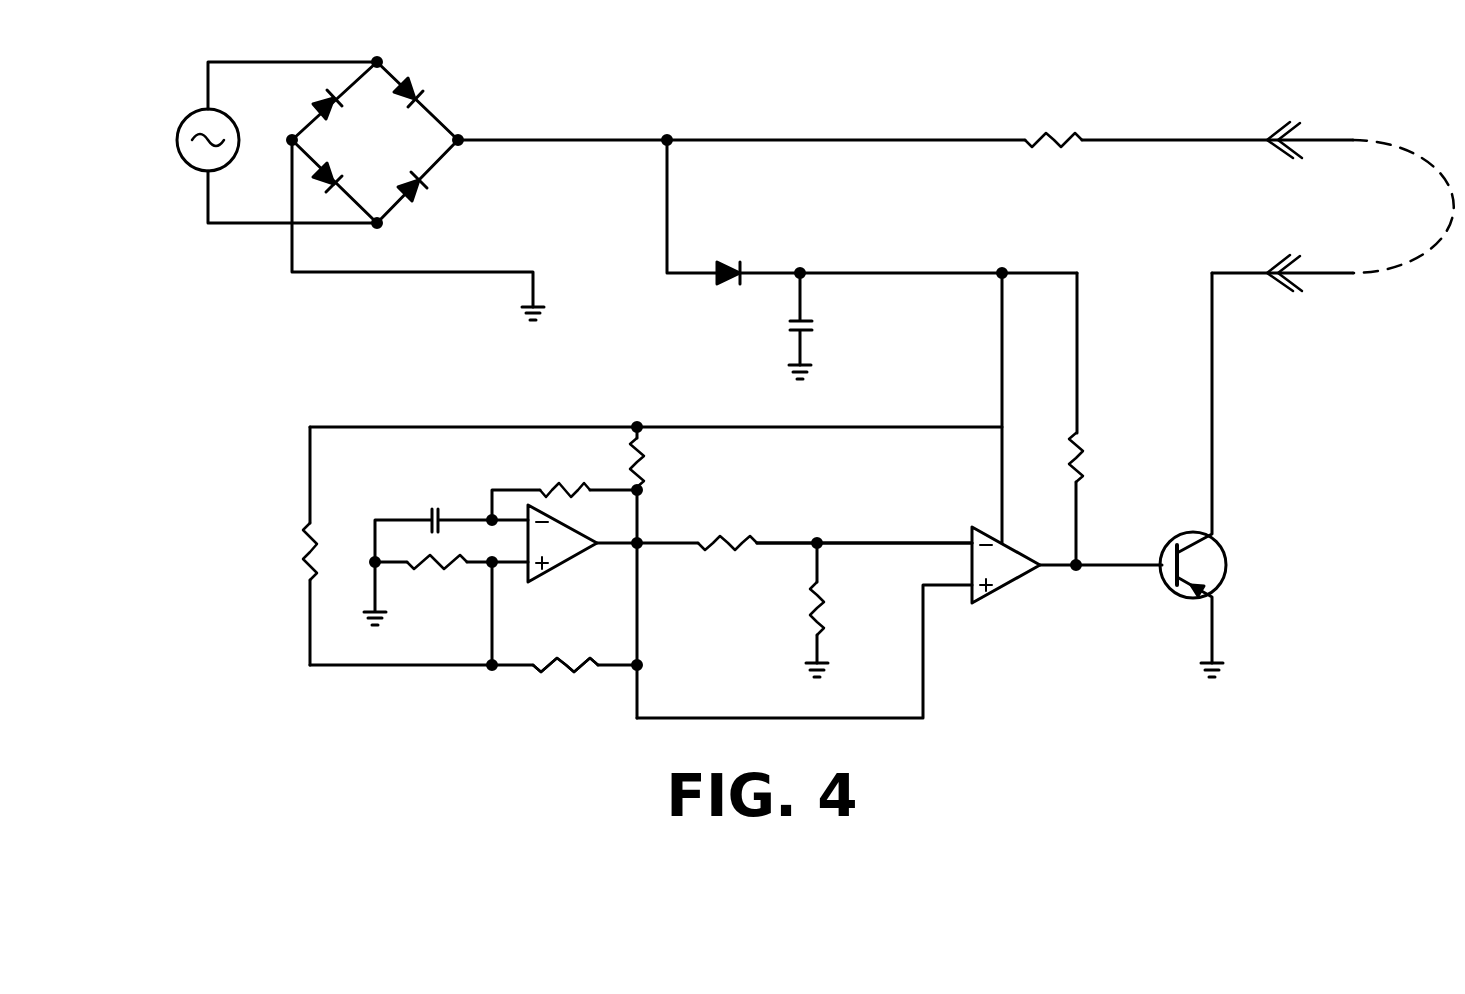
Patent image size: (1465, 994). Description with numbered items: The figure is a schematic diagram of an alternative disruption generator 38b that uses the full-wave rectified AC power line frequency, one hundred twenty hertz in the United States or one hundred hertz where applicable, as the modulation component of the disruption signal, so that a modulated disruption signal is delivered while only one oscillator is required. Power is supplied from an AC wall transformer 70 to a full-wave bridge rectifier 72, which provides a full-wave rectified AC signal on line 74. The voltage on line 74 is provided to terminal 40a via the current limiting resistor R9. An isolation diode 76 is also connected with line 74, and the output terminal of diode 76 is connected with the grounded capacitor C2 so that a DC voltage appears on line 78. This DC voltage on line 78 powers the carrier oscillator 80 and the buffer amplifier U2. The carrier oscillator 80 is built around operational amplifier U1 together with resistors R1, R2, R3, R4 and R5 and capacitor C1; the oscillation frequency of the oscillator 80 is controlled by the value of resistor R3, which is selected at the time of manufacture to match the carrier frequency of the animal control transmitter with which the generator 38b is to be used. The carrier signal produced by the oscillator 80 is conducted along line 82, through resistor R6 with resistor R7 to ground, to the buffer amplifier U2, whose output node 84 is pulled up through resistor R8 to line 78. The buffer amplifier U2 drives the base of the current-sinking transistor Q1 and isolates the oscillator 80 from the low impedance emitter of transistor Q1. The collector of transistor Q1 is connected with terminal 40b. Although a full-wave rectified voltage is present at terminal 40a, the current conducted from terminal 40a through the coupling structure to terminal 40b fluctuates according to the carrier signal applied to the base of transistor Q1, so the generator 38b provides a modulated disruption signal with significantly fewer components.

The disruption generator 38b is at (297, 351).
The AC wall transformer 70 is at (188, 118).
The full-wave bridge rectifier 72 is at (445, 103).
The line 74 is at (667, 140).
The isolation diode 76 is at (729, 256).
The line 78 is at (893, 273).
The carrier oscillator 80 is at (558, 688).
The line 82 is at (857, 543).
The comparator output node 84 is at (1076, 567).
The terminal 40a is at (1270, 132).
The terminal 40b is at (1267, 280).
The resistor R1 is at (285, 546).
The resistor R2 is at (446, 590).
The resistor R3 is at (567, 483).
The resistor R4 is at (587, 648).
The resistor R5 is at (662, 572).
The resistor R6 is at (835, 523).
The resistor R7 is at (840, 608).
The resistor R8 is at (1106, 419).
The current limiting resistor R9 is at (1189, 118).
The capacitor C1 is at (451, 517).
The grounded capacitor C2 is at (827, 326).
The operational amplifier U1 is at (613, 555).
The buffer amplifier U2 is at (899, 622).
The current-sinking transistor Q1 is at (1216, 475).